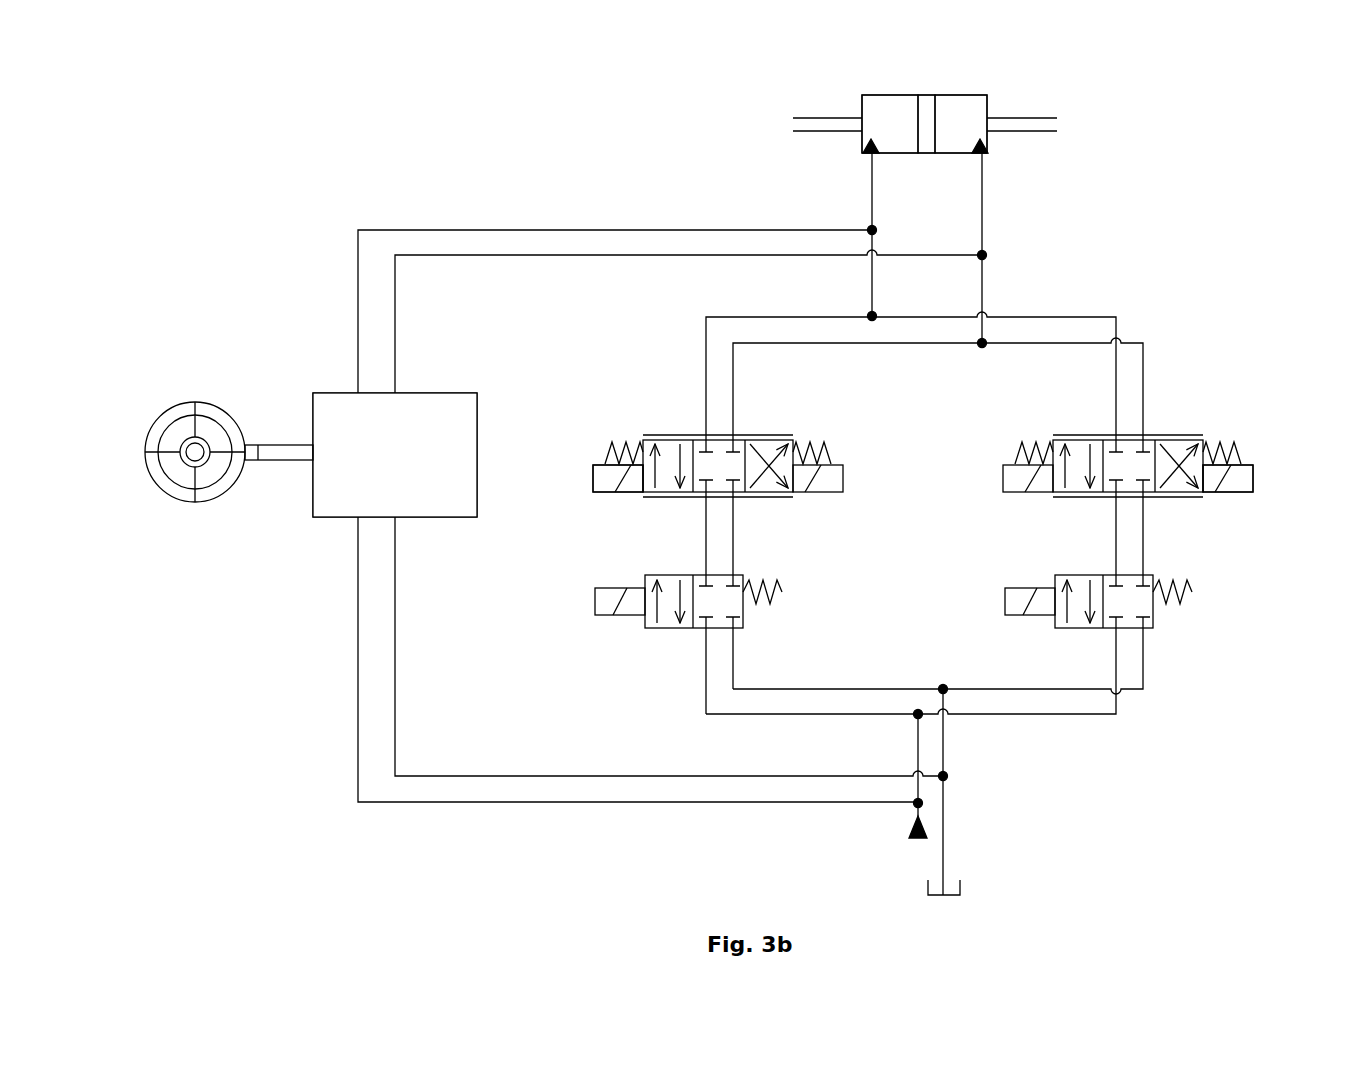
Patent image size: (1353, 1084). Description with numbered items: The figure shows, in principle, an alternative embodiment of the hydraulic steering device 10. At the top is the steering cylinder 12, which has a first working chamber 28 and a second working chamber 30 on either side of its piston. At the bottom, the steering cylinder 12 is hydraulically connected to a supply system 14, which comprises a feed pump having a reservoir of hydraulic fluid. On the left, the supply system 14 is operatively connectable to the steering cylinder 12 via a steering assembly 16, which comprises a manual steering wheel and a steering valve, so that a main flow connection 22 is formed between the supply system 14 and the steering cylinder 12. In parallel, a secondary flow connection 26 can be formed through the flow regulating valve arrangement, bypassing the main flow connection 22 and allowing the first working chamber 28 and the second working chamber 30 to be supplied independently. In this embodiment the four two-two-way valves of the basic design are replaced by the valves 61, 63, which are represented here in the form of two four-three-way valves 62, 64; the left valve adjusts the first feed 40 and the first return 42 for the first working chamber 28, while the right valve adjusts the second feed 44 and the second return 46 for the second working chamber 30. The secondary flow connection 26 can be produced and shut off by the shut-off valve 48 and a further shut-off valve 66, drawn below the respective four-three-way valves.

The hydraulic steering device 10 is at (230, 155).
The steering cylinder 12 is at (887, 96).
The supply system 14 is at (958, 805).
The steering assembly 16 is at (245, 530).
The main flow connection 22 is at (550, 272).
The secondary flow connection 26 is at (1018, 280).
The first working chamber 28 is at (888, 103).
The second working chamber 30 is at (948, 103).
The first feed 40 is at (710, 408).
The first return 42 is at (695, 362).
The second feed 44 is at (1151, 440).
The second return 46 is at (1150, 390).
The shut-off valve 48 is at (1175, 635).
The valve 61 is at (585, 516).
The 4/3-way valve 62 is at (650, 505).
The valve 63 is at (1240, 525).
The 4/3-way valve 64 is at (1180, 510).
The further shut-off valve 66 is at (765, 625).